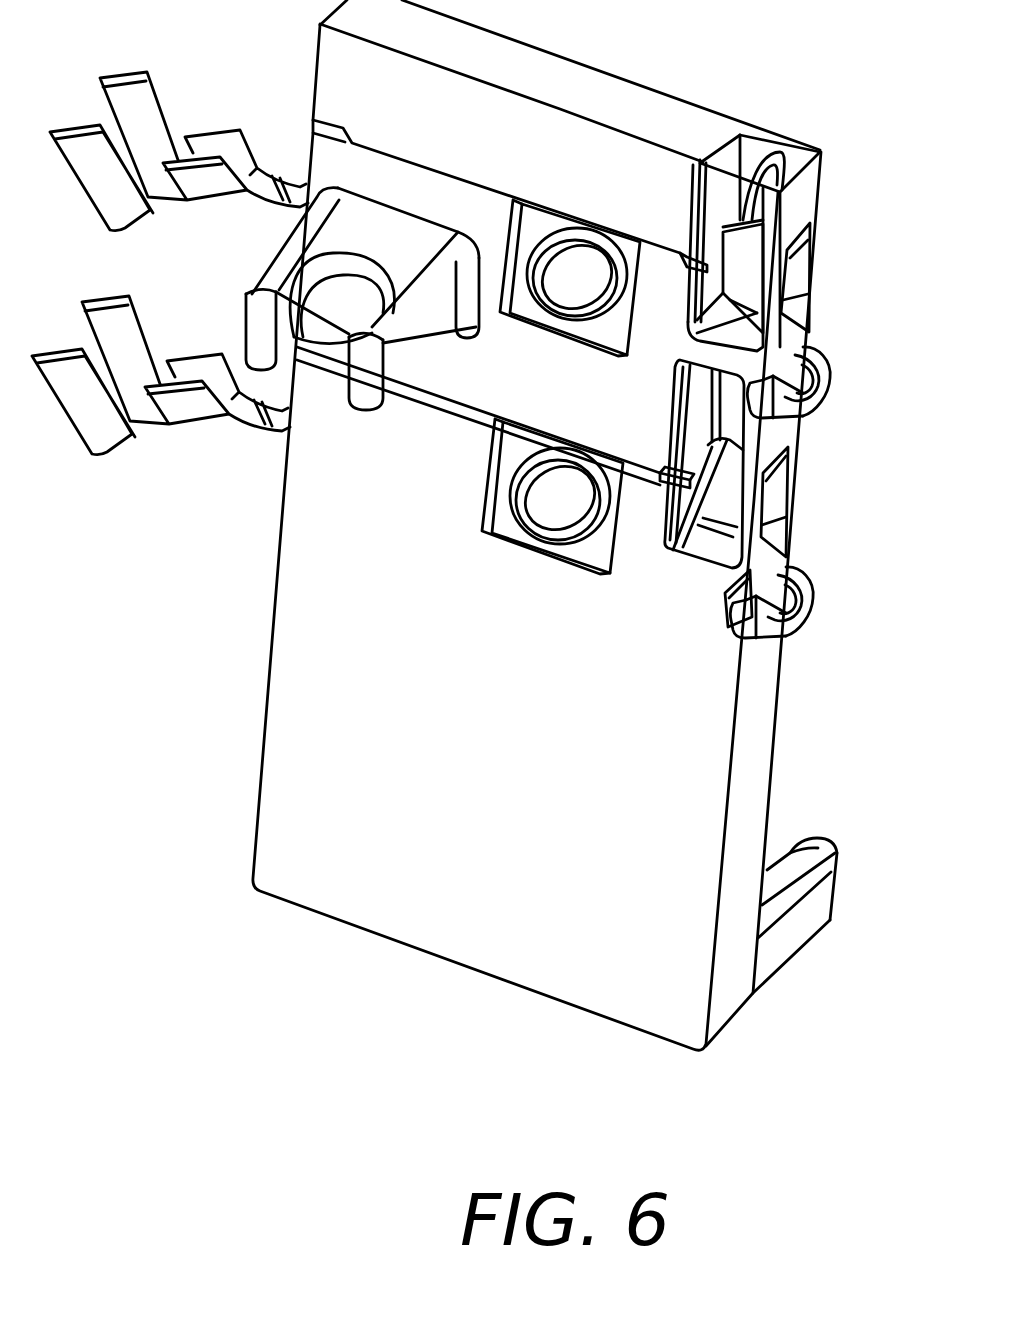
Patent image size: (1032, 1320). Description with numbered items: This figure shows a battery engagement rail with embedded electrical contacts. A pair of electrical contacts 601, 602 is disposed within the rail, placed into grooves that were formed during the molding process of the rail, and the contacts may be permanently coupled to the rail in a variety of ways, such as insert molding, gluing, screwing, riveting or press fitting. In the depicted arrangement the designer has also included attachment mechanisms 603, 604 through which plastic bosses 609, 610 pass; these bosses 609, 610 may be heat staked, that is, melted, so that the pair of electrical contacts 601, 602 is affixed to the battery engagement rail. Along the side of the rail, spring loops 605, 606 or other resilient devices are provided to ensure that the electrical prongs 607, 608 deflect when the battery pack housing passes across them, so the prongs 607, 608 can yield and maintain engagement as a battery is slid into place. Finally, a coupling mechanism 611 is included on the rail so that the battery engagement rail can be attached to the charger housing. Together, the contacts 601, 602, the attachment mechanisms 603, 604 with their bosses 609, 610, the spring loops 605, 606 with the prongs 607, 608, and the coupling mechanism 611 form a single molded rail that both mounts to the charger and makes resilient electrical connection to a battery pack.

The electrical contact 601 is at (133, 88).
The electrical contact 602 is at (117, 318).
The attachment mechanism 603 is at (570, 281).
The attachment mechanism 604 is at (525, 517).
The spring loop 605 is at (765, 155).
The spring loop 606 is at (685, 545).
The electrical prong 607 is at (830, 388).
The electrical prong 608 is at (813, 607).
The plastic boss 609 is at (582, 280).
The plastic boss 610 is at (563, 500).
The coupling mechanism 611 is at (389, 387).